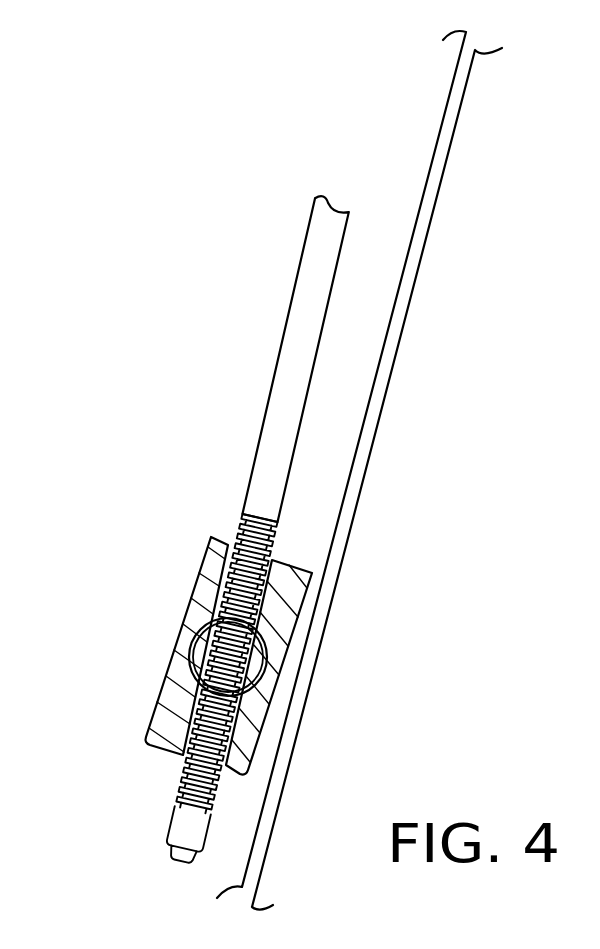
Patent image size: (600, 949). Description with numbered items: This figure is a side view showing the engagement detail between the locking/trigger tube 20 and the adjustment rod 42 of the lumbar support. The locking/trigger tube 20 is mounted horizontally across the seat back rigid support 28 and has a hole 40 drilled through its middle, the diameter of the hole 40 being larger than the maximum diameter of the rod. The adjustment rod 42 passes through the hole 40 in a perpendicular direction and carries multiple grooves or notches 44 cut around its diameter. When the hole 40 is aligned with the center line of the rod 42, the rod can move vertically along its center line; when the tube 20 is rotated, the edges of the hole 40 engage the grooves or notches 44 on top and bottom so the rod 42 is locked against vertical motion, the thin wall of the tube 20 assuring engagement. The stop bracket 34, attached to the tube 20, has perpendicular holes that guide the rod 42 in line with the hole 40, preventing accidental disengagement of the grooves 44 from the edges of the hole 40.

The locking/trigger tube 20 is at (264, 667).
The seat back rigid support 28 is at (434, 153).
The stop bracket 34 is at (195, 580).
The hole 40 is at (245, 616).
The adjustment rod 42 is at (263, 423).
The grooves or notches 44 is at (202, 563).